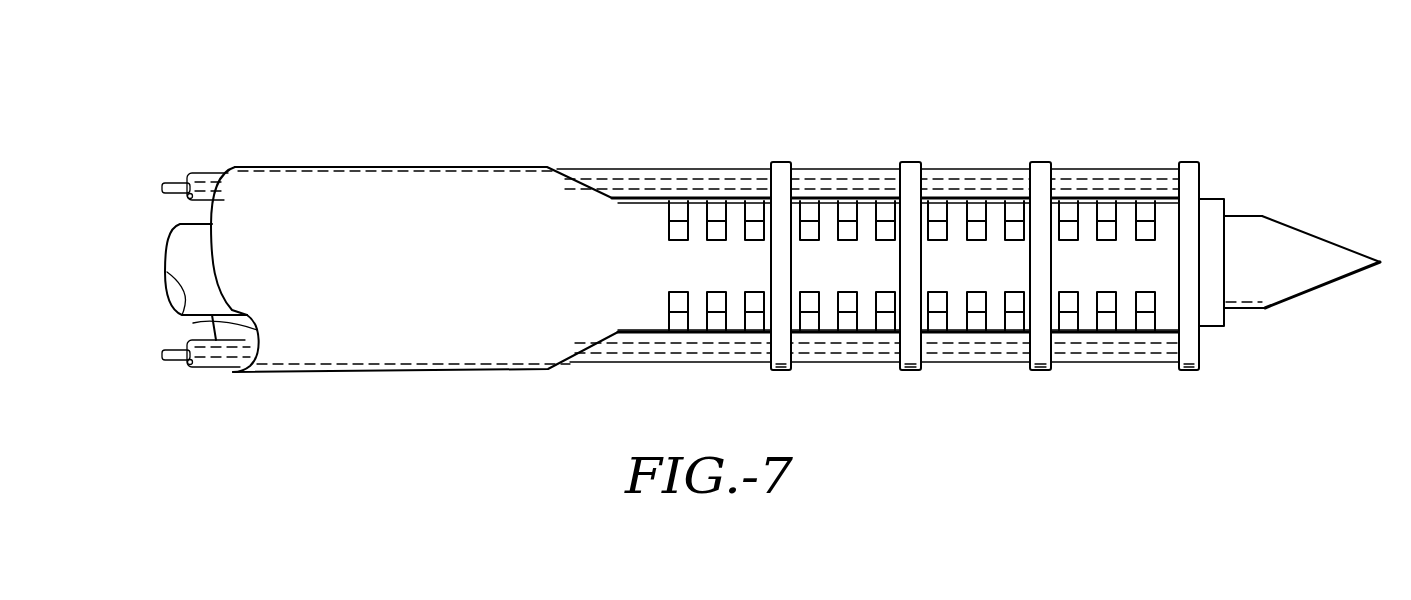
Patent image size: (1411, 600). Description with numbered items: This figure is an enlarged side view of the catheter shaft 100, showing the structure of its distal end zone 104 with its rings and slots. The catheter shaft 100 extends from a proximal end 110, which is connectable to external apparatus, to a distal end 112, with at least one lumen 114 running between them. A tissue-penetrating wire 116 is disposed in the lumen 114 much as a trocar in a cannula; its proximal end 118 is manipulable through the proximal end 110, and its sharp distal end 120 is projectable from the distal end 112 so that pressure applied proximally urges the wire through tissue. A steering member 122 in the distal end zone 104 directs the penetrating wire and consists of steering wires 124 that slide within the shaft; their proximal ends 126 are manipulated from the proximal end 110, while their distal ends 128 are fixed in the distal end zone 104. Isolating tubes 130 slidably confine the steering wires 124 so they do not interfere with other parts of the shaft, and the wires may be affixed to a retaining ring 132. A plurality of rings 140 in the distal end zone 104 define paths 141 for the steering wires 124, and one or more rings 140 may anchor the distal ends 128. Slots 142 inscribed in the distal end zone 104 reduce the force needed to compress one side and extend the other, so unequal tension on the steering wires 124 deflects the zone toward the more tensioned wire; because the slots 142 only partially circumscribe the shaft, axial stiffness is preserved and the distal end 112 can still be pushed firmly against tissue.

The catheter shaft 100 is at (547, 166).
The distal end zone 104 is at (840, 168).
The proximal end 110 is at (236, 167).
The distal end 112 is at (1226, 199).
The lumen 114 is at (1228, 215).
The tissue-penetrating wire 116 is at (192, 224).
The proximal end 118 is at (180, 225).
The sharp distal end 120 is at (1380, 262).
The steering member 122 is at (618, 169).
The steering wires 124 is at (237, 358).
The proximal ends 126 is at (164, 362).
The distal ends 128 is at (1179, 165).
The isolating tubes 130 is at (1120, 364).
The retaining ring 132 is at (1190, 372).
The rings 140 is at (904, 162).
The paths 141 is at (921, 172).
The slots 142 is at (716, 240).